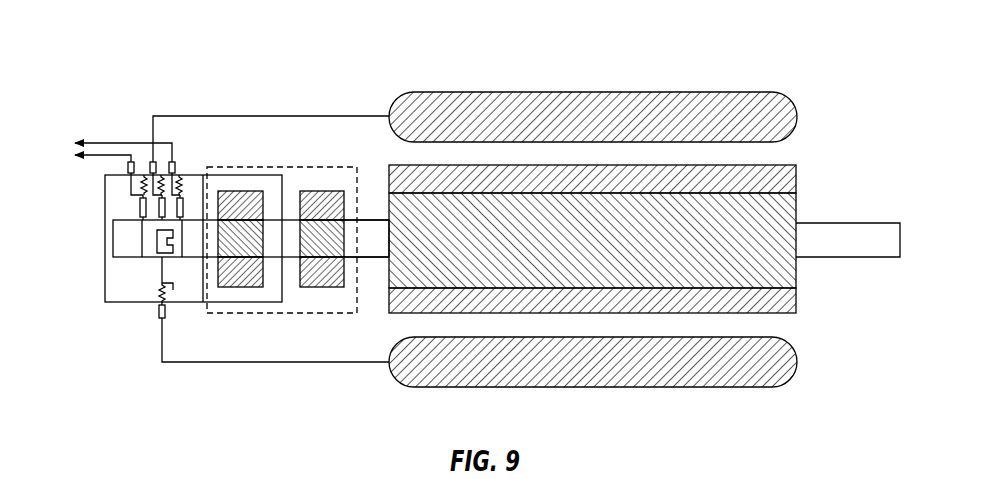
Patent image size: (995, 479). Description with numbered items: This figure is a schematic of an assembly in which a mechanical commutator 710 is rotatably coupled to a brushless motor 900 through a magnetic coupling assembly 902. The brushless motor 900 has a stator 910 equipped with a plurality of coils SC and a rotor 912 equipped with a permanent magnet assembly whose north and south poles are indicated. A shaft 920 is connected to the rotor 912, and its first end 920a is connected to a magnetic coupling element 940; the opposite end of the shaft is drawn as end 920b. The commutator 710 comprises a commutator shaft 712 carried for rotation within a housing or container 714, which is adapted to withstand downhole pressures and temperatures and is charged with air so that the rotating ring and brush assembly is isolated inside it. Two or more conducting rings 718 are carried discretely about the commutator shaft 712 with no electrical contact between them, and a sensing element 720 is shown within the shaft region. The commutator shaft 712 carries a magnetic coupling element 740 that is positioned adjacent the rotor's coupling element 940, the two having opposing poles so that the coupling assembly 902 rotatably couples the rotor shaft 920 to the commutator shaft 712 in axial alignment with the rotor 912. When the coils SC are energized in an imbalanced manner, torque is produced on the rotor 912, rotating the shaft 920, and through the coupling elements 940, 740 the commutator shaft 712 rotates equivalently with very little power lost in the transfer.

The brushless motor 900 is at (750, 53).
The stator 910 is at (802, 100).
The rotor 912 is at (799, 195).
The rotor shaft 920 is at (638, 240).
The first end of shaft 920a is at (380, 248).
The shaft extension 920b is at (880, 250).
The magnetic coupling assembly 902 is at (227, 313).
The magnetic coupling element 940 is at (324, 190).
The magnetic coupling element 740 is at (243, 190).
The mechanical commutator 710 is at (147, 108).
The commutator shaft 712 is at (125, 258).
The housing or container 714 is at (118, 303).
The conducting rings 718 is at (178, 260).
The sensing element 720 is at (158, 230).
The coils SC is at (512, 108).